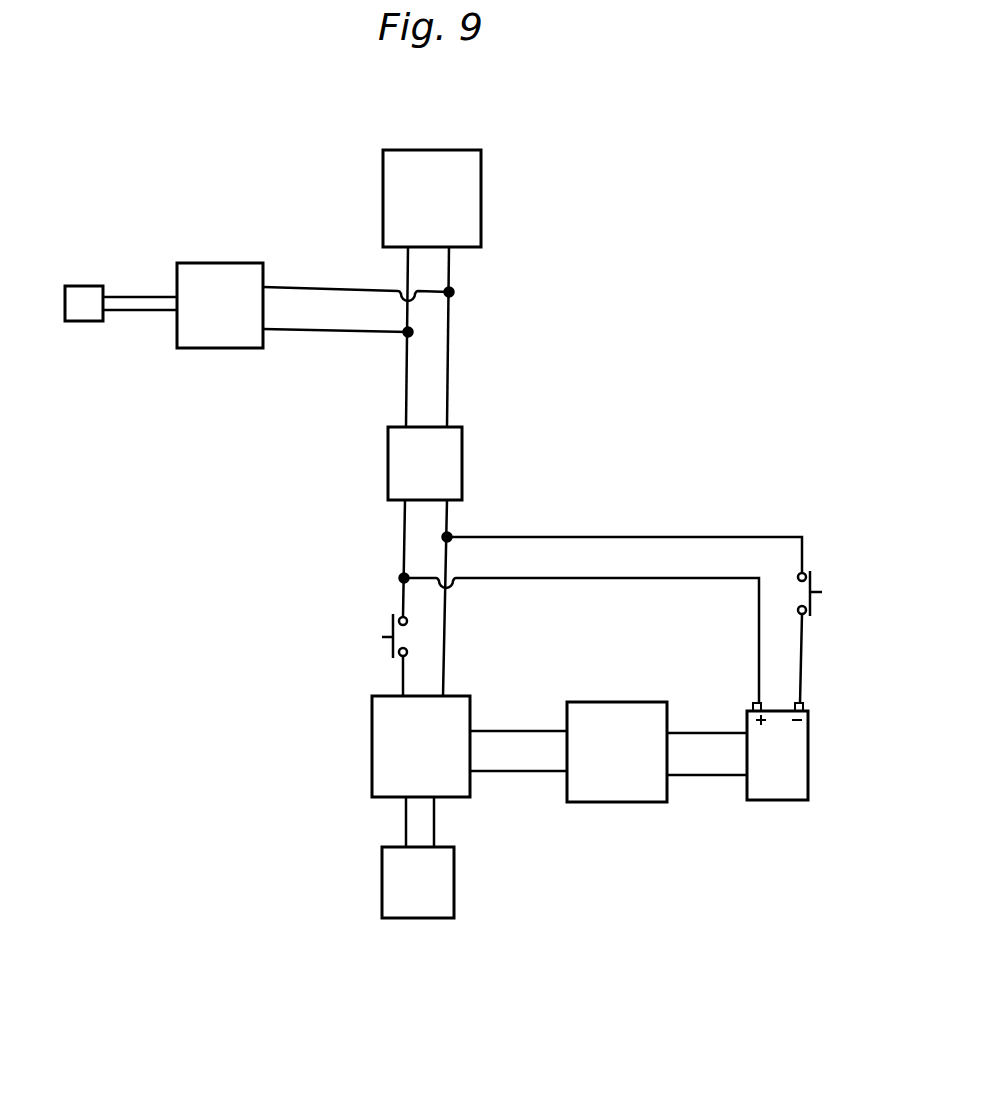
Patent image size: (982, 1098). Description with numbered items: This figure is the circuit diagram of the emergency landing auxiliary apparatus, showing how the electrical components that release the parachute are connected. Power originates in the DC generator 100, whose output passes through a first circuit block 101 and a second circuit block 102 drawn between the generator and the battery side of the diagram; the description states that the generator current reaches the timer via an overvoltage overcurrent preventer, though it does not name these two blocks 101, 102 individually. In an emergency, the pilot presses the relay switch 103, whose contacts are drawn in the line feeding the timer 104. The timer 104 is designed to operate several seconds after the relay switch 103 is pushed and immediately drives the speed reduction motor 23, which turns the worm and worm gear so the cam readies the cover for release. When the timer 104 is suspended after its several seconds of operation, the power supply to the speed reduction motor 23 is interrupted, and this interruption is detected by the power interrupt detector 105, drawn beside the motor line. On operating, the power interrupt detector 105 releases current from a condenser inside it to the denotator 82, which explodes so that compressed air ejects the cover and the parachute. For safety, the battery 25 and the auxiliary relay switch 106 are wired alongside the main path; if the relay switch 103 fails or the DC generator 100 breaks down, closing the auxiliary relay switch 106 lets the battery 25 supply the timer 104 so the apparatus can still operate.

The speed reduction motor 23 is at (476, 173).
The battery 25 is at (798, 753).
The denotator 82 is at (85, 315).
The DC generator 100 is at (392, 891).
The control unit 101 is at (381, 773).
The power supply circuit 102 is at (618, 790).
The relay switch 103 is at (369, 650).
The timer 104 is at (455, 450).
The power interrupt detector 105 is at (205, 271).
The auxiliary relay switch 106 is at (848, 589).